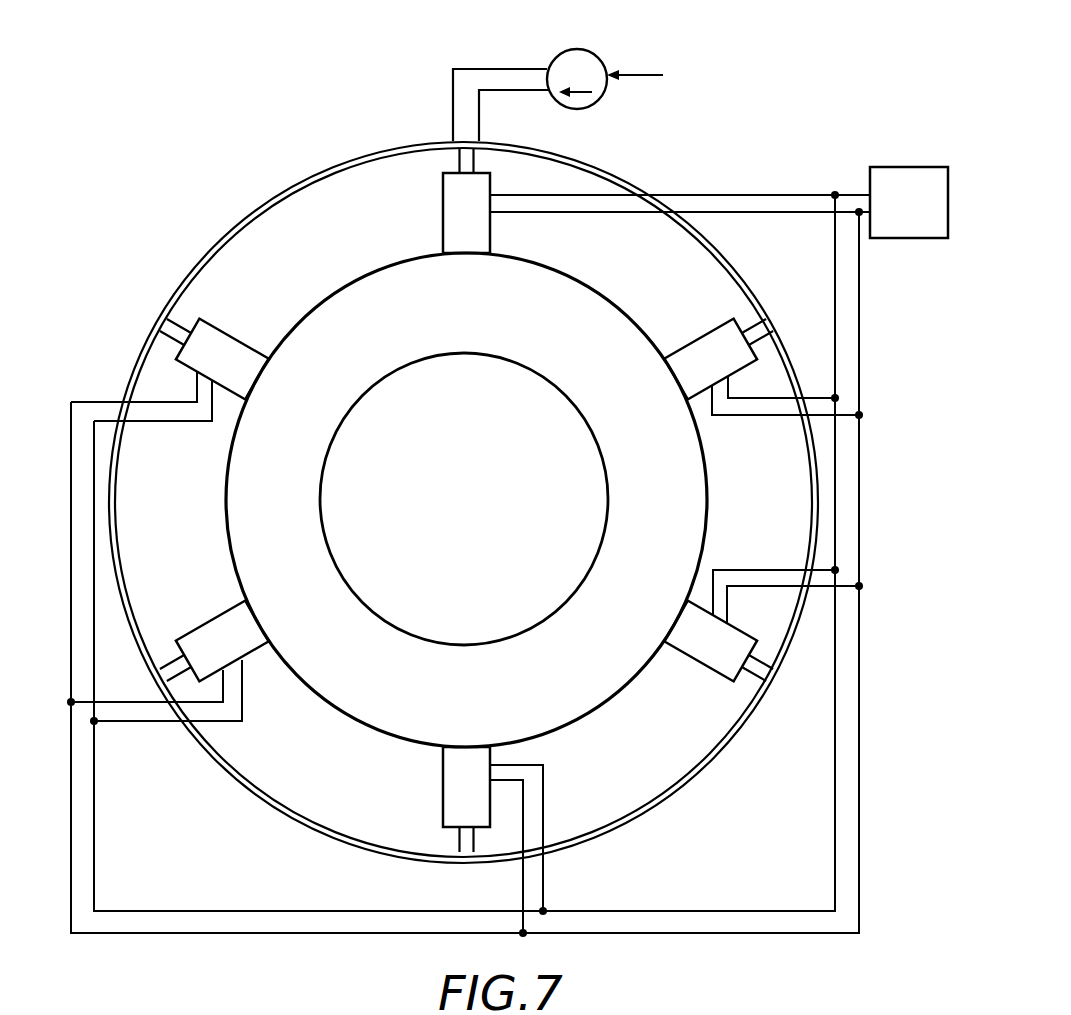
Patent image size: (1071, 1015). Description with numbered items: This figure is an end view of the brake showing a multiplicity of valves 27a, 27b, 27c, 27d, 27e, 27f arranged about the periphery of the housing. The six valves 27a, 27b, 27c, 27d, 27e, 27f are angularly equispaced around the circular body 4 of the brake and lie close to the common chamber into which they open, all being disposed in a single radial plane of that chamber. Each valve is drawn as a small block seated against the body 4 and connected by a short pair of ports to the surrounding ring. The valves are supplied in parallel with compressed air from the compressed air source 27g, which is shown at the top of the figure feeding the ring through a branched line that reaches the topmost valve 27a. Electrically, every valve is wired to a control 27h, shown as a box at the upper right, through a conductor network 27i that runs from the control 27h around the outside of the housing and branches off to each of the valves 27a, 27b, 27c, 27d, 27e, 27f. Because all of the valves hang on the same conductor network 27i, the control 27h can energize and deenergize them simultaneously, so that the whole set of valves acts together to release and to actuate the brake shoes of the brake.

The stator ring 4 is at (339, 714).
The valve 27a is at (491, 226).
The valve 27b is at (249, 357).
The valve 27c is at (230, 628).
The valve 27d is at (450, 778).
The valve 27e is at (715, 663).
The valve 27f is at (703, 345).
The compressed air source 27g is at (599, 50).
The control 27h is at (912, 240).
The conductor network 27i is at (732, 194).